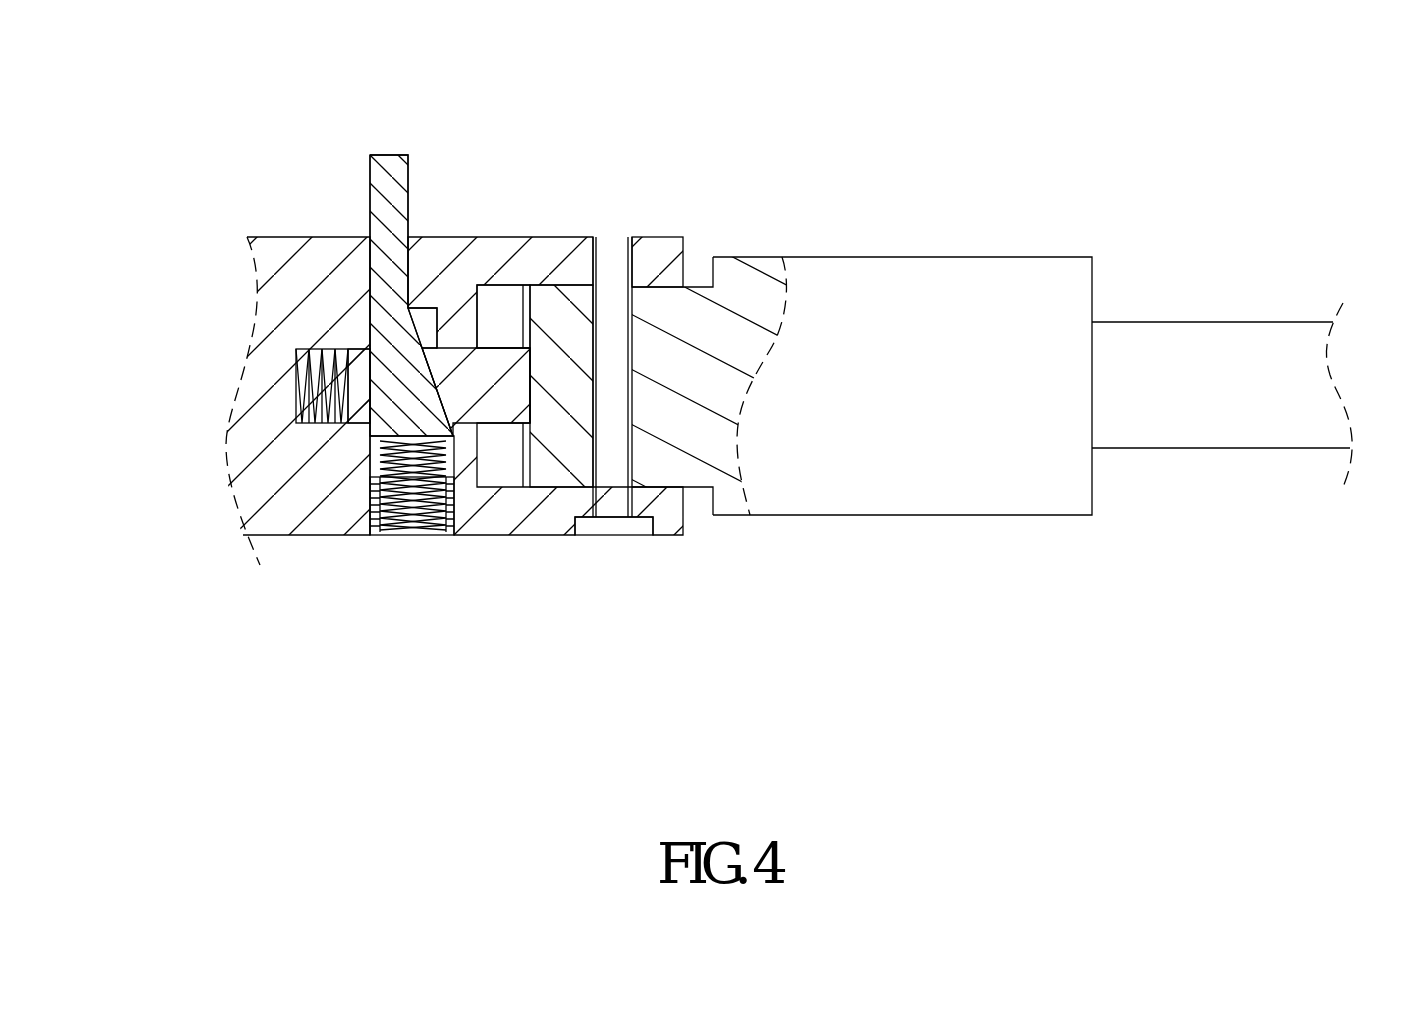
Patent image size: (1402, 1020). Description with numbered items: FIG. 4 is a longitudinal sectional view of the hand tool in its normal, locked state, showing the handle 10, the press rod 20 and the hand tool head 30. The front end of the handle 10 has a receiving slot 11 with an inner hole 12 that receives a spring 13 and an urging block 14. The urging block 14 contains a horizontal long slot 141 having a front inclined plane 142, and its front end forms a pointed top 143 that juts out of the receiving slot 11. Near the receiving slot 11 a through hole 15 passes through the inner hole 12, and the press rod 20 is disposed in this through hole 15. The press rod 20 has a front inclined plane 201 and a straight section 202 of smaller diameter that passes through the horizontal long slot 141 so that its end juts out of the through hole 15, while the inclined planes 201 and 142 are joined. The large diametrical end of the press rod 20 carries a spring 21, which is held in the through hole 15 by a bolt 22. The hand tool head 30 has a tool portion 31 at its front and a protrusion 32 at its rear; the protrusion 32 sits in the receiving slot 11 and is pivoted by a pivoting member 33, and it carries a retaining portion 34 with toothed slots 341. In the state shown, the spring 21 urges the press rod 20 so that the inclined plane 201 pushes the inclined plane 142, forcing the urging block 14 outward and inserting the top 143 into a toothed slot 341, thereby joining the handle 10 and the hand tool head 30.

The handle 10 is at (267, 480).
The receiving slot 11 is at (496, 318).
The inner hole 12 is at (297, 362).
The spring 13 is at (323, 395).
The urging block 14 is at (457, 362).
The horizontal long slot 141 is at (418, 362).
The front inclined plane 142 is at (370, 460).
The pointed top 143 is at (532, 395).
The through hole 15 is at (380, 483).
The press rod 20 is at (265, 232).
The front inclined plane 201 is at (422, 333).
The straight section 202 is at (388, 188).
The spring 21 is at (413, 490).
The bolt 22 is at (445, 513).
The hand tool head 30 is at (997, 330).
The tool portion 31 is at (1193, 387).
The protrusion 32 is at (755, 302).
The pivoting member 33 is at (623, 528).
The retaining portion 34 is at (522, 456).
The toothed slot 341 is at (530, 300).